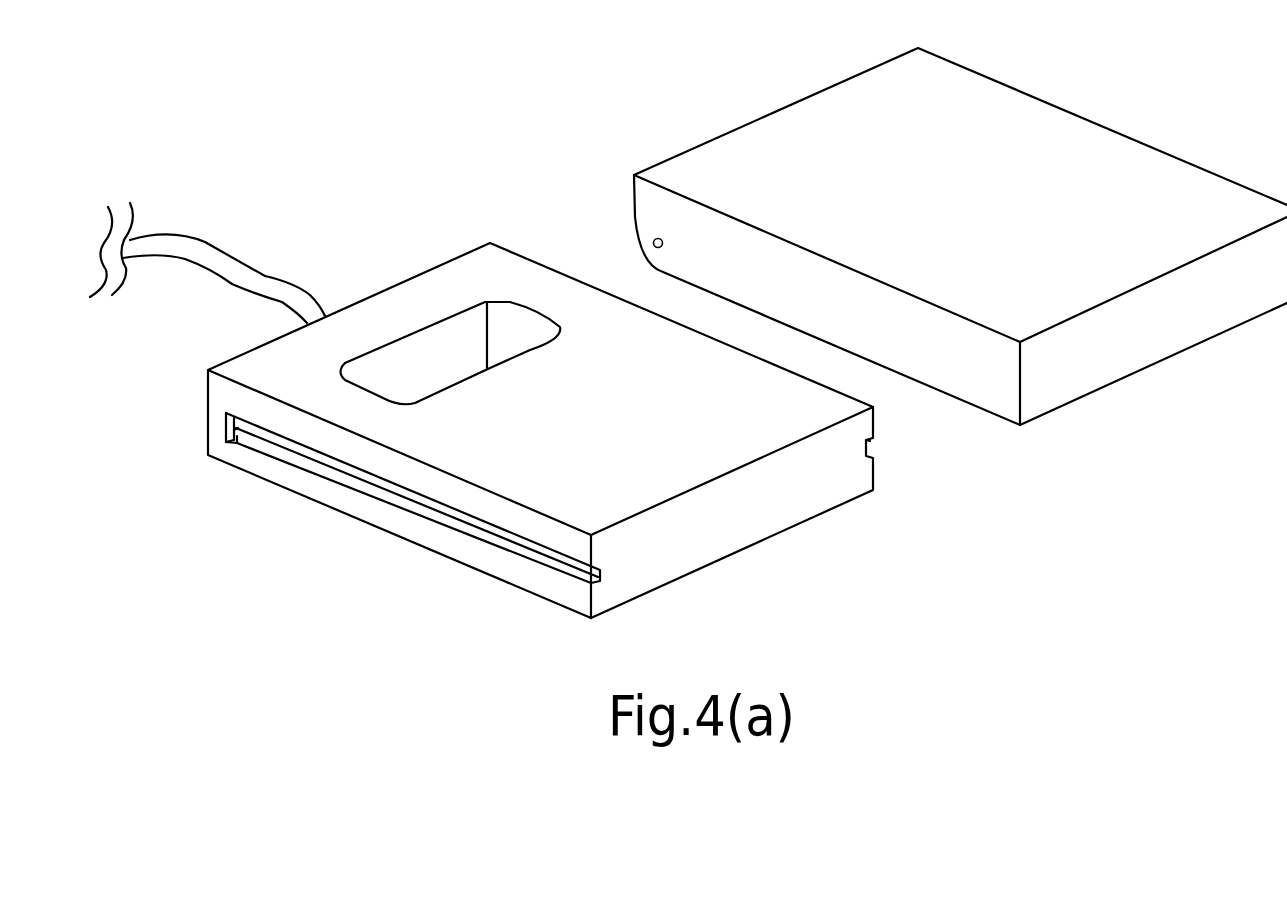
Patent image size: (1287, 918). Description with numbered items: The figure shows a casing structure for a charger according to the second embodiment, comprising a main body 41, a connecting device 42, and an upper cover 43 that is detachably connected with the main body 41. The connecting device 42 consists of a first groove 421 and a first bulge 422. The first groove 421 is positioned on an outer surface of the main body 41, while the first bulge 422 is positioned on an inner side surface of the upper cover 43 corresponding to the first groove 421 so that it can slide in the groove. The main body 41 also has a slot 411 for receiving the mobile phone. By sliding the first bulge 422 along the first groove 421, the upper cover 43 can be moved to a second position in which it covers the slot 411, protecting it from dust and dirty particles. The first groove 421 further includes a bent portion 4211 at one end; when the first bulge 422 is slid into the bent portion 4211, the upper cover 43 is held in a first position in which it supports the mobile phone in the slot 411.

The main body 41 is at (818, 488).
The slot 411 is at (504, 320).
The connecting device 42 is at (540, 76).
The first groove 421 is at (335, 462).
The bent portion 4211 is at (226, 442).
The first bulge 422 is at (657, 237).
The upper cover 43 is at (1138, 168).